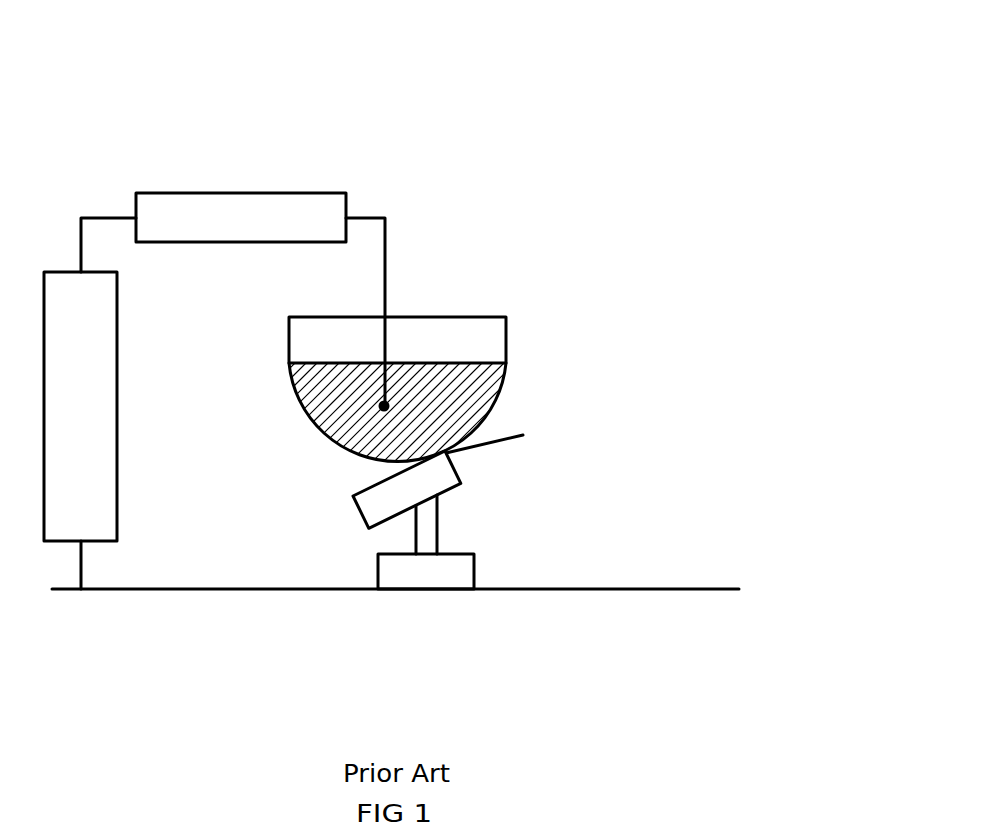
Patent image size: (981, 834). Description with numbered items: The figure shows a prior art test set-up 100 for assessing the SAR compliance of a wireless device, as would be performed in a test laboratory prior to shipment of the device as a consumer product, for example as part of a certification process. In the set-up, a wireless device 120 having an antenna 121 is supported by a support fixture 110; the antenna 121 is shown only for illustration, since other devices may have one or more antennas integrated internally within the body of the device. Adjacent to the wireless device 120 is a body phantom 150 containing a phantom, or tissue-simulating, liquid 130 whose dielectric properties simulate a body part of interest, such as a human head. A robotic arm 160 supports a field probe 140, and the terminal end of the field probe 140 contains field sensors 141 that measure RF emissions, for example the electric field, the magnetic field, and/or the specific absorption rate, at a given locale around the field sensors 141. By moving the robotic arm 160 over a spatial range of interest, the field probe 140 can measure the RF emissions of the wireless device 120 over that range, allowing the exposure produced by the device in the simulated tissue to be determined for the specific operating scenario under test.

The prior art electrochemical system 100 is at (612, 62).
The support post 110 is at (438, 521).
The tilted stage 120 is at (355, 505).
The stage surface line 121 is at (517, 441).
The liquid electrolyte 130 is at (505, 394).
The electrode wire 140 is at (386, 247).
The electrode tip 141 is at (380, 408).
The container 150 is at (507, 338).
The power supply 160 is at (287, 193).